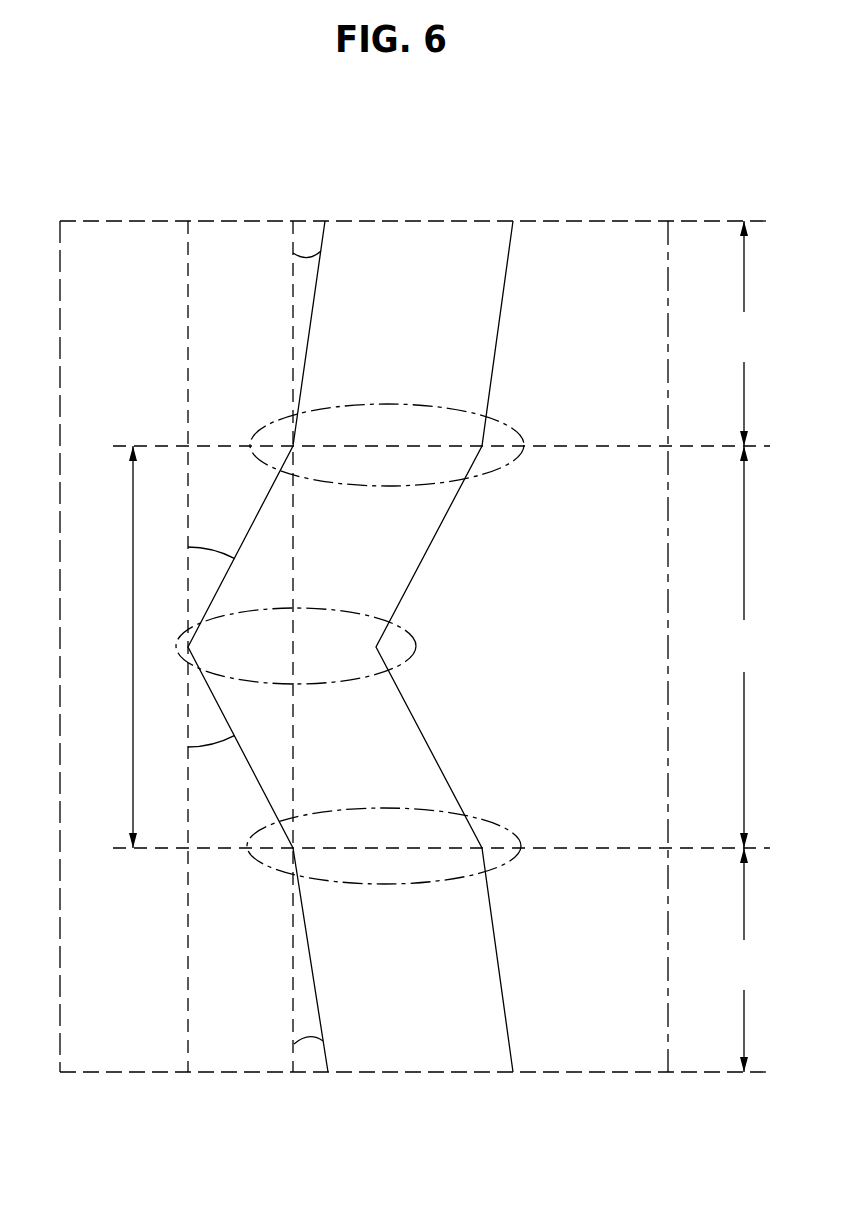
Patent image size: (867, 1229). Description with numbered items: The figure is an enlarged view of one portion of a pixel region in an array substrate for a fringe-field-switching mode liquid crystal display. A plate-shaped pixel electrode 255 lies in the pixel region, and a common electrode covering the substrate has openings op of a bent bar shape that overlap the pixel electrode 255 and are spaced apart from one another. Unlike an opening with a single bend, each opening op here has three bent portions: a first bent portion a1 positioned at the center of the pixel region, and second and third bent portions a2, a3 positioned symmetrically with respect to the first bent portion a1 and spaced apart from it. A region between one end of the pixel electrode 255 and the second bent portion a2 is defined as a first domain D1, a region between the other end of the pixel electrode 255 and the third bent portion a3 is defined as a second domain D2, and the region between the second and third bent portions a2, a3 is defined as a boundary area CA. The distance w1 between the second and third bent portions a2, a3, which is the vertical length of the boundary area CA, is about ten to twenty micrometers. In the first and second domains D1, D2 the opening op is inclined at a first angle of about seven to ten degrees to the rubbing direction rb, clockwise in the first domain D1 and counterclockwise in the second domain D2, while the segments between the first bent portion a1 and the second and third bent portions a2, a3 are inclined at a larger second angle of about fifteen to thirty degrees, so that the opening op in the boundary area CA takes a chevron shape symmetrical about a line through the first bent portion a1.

The pixel electrode 255 is at (121, 255).
The rubbing direction rb is at (289, 260).
The opening op is at (404, 255).
The first bent portion a1 is at (428, 641).
The second bent portion a2 is at (514, 413).
The third bent portion a3 is at (502, 814).
The distance w1 is at (441, 647).
The first domain D1 is at (745, 333).
The boundary area CA is at (745, 647).
The second domain D2 is at (745, 960).